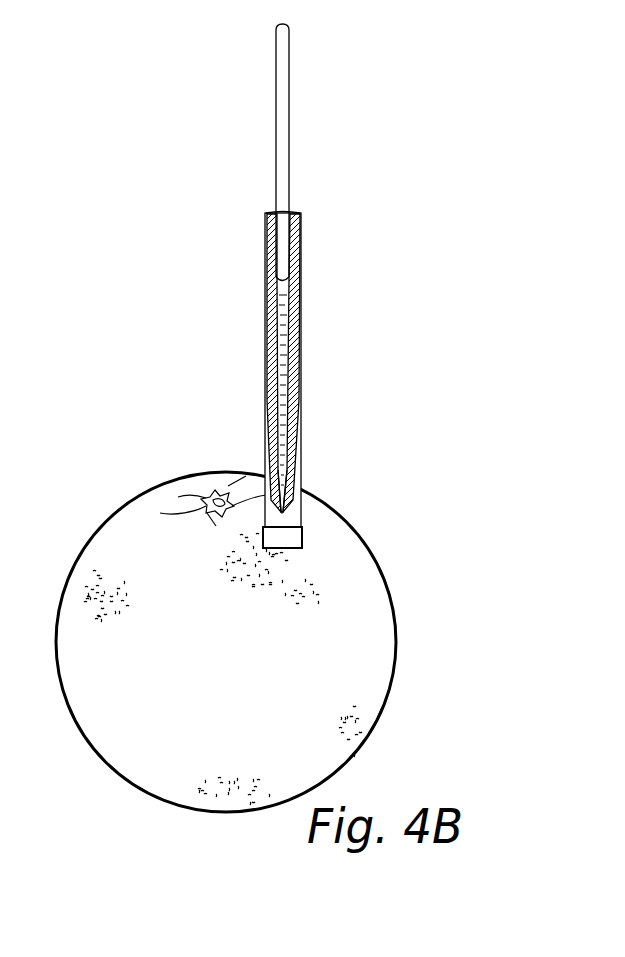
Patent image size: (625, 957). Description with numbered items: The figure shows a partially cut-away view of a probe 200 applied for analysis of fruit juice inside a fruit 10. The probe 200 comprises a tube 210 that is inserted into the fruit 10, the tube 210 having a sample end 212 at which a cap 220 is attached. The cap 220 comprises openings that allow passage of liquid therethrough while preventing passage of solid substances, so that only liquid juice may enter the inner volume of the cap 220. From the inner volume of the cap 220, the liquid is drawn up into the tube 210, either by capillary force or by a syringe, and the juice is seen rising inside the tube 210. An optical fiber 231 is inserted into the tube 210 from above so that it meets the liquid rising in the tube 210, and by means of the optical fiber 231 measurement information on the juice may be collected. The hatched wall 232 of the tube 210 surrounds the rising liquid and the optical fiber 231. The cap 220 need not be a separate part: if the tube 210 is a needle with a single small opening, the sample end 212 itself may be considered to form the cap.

The fruit 10 is at (115, 548).
The probe 200 is at (295, 303).
The tube 210 is at (266, 276).
The sample end 212 is at (300, 507).
The cap 220 is at (300, 540).
The optical fiber 231 is at (286, 160).
The sheath wall of sleeve 232 is at (279, 283).